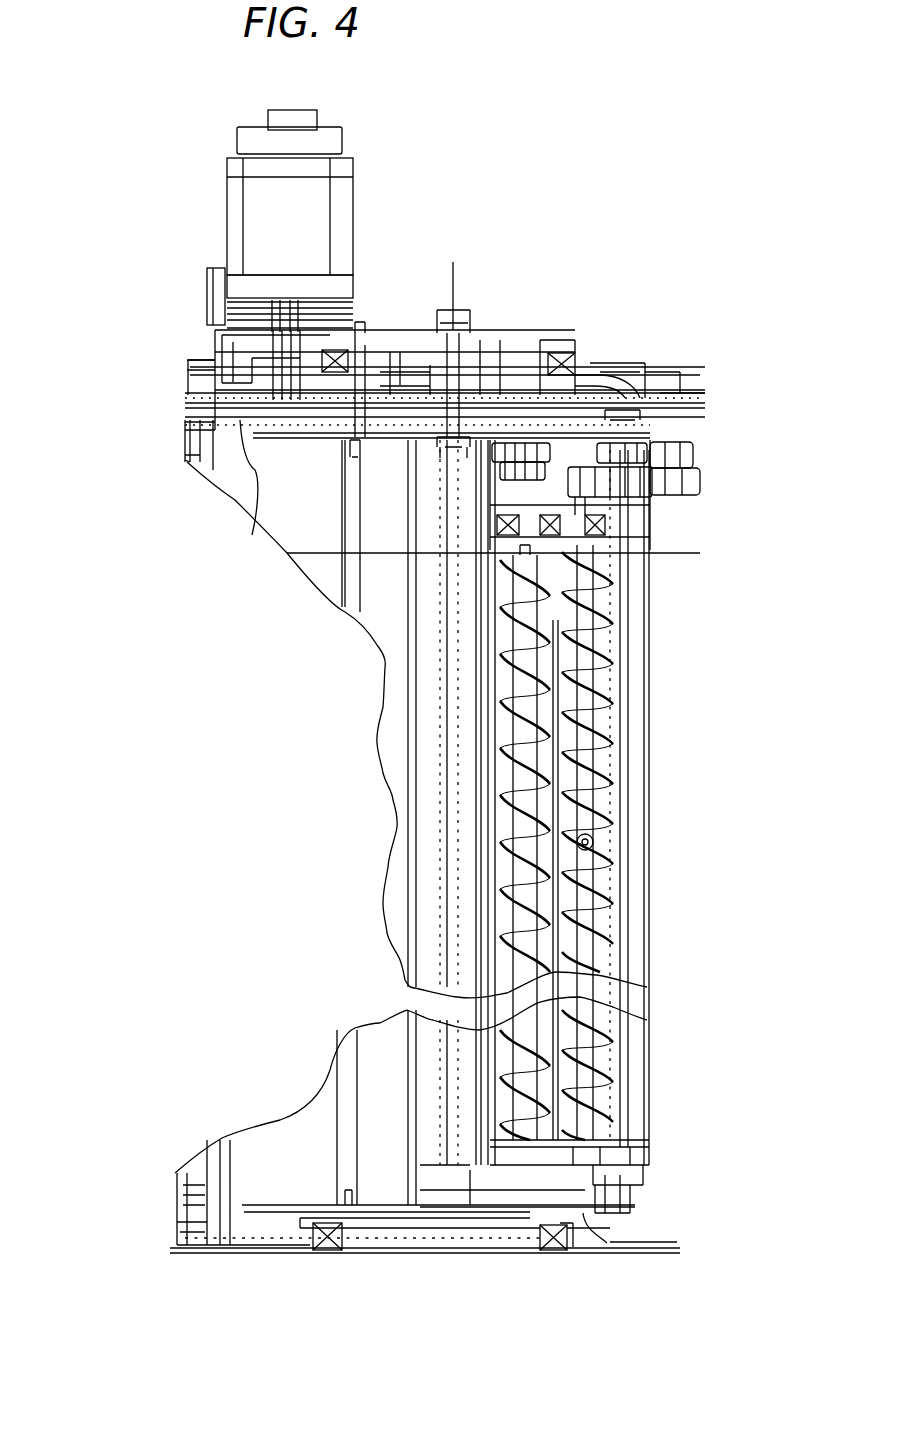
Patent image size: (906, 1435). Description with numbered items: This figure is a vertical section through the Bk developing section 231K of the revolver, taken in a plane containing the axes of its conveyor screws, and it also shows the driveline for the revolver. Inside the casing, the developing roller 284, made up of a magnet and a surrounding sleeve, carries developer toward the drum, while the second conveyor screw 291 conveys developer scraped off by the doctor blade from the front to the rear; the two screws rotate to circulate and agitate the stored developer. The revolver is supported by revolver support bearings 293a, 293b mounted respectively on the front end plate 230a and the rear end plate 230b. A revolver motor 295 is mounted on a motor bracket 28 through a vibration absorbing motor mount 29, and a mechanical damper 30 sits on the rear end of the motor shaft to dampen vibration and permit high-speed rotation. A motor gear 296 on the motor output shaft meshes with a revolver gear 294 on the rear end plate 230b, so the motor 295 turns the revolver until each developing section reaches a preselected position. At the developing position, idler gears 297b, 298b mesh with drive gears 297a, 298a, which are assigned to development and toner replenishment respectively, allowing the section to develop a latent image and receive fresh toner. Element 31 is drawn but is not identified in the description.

The mechanical damper 30 is at (342, 140).
The revolver motor 295 is at (226, 214).
The bracket 31 is at (207, 288).
The motor bracket 28 is at (215, 338).
The motor mount 29 is at (350, 330).
The motor gear 296 is at (190, 397).
The revolver support bearing 293b is at (560, 342).
The revolver gear 294 is at (605, 365).
The idler gear 298b is at (660, 392).
The drive gear 298a is at (693, 450).
The drive gear 297a is at (700, 487).
The idler gear 297b is at (652, 485).
The rear end plate 230b is at (443, 703).
The developing roller 284 is at (500, 687).
The second conveyor screw 291 is at (612, 727).
The Bk developing section 231K is at (650, 826).
The revolver support bearing 293a is at (325, 1255).
The front end plate 230a is at (607, 1243).